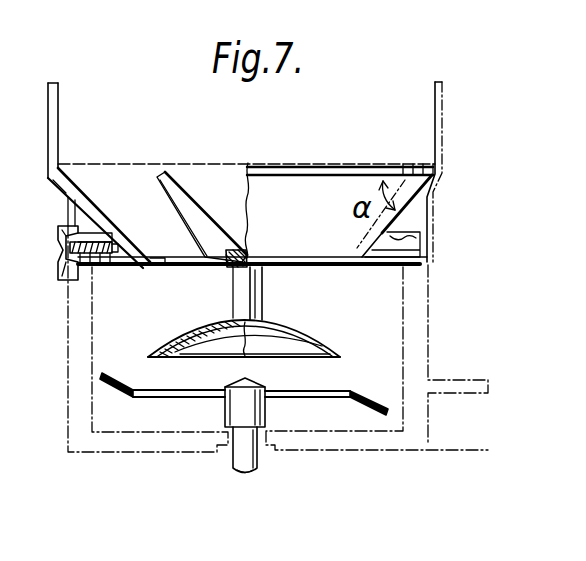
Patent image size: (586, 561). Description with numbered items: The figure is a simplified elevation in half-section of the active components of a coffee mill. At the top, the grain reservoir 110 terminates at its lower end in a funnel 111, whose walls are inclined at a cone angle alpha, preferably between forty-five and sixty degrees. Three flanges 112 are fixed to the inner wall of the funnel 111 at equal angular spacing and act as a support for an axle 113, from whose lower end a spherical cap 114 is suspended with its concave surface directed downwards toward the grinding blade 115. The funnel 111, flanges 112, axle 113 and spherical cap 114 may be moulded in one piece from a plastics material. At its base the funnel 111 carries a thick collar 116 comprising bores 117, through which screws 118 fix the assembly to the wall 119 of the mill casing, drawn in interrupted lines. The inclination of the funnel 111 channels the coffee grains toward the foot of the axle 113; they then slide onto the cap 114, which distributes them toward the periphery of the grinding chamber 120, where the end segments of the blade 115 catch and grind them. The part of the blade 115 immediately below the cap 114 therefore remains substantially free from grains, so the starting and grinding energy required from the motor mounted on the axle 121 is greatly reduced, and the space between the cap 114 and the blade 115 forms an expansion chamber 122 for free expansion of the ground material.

The grain reservoir 110 is at (415, 112).
The funnel 111 is at (100, 212).
The flanges 112 is at (193, 200).
The axle 113 is at (258, 292).
The spherical cap 114 is at (174, 338).
The grinding blade 115 is at (184, 398).
The thick collar 116 is at (420, 236).
The bores 117 is at (97, 262).
The screws 118 is at (62, 247).
The wall of the mill casing 119 is at (72, 348).
The grinding chamber 120 is at (393, 321).
The motor axle 121 is at (253, 448).
The disc underside 122 is at (250, 366).